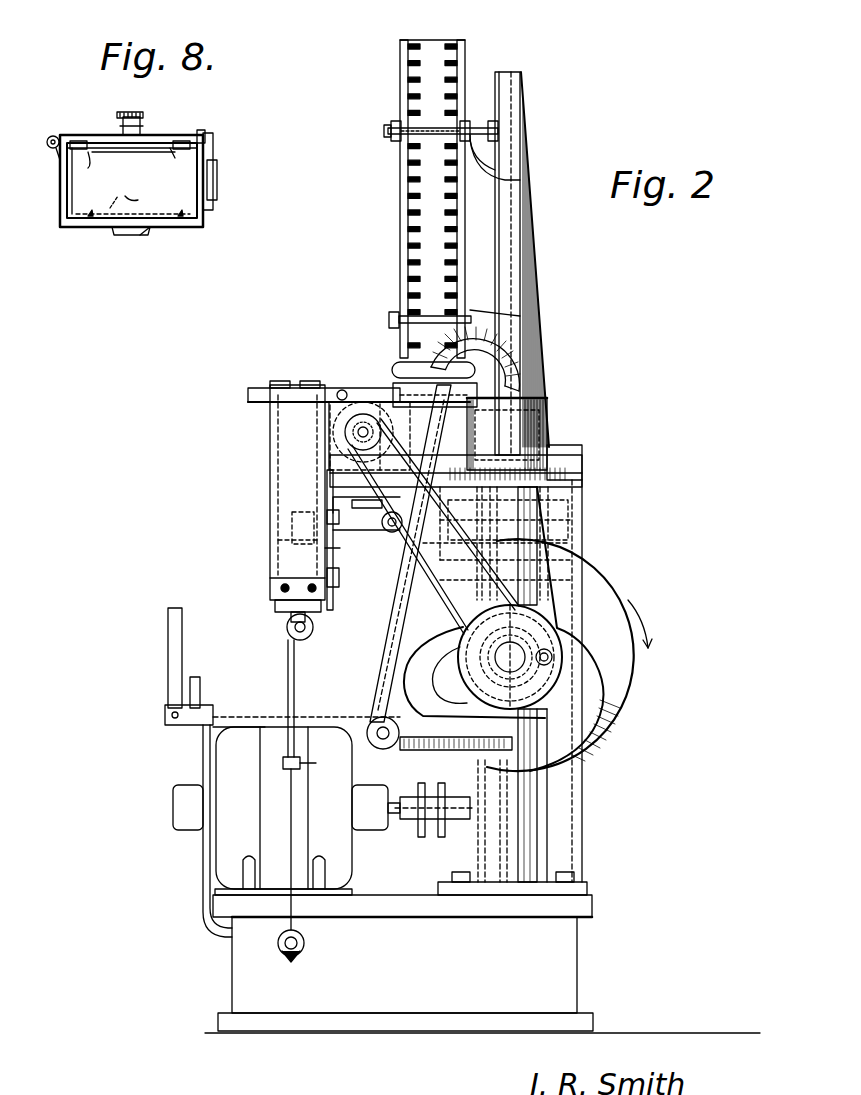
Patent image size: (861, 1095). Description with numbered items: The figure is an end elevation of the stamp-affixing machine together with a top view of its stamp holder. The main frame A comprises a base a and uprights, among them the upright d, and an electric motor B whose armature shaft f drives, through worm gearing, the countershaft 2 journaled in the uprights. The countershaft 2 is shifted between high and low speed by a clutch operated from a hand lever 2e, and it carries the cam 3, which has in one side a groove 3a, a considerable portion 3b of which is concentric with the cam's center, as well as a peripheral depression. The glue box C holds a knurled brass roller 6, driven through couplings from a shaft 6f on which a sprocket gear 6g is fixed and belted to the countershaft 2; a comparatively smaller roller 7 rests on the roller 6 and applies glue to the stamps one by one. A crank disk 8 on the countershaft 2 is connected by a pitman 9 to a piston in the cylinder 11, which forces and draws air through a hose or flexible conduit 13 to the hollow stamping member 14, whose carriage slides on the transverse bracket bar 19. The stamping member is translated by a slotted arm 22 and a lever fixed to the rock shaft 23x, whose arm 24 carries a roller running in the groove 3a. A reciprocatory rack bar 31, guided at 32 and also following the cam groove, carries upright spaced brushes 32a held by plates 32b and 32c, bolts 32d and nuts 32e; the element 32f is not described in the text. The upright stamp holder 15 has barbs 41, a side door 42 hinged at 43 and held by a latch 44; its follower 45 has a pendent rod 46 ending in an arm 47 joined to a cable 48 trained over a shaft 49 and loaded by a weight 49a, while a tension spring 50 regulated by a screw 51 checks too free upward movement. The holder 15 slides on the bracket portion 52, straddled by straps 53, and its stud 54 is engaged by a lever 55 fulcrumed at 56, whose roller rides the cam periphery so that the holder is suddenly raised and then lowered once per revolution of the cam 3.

In FIG. 2, the countershaft 2 is at (515, 662).
In FIG. 2, the hand lever 2e is at (168, 645).
In FIG. 2, the cam 3 is at (602, 580).
In FIG. 2, the groove 3a is at (652, 623).
In FIG. 2, the concentric portion of the groove 3b is at (560, 748).
In FIG. 2, the roller 6 is at (312, 426).
In FIG. 2, the shaft 6f is at (340, 390).
In FIG. 2, the sprocket gear 6g is at (365, 420).
In FIG. 8, the roller 7 is at (174, 156).
In FIG. 2, the roller 7 is at (330, 395).
In FIG. 2, the crank disk 8 is at (552, 657).
In FIG. 2, the pitman 9 is at (520, 625).
In FIG. 2, the cylinder 11 is at (515, 432).
In FIG. 2, the hose or flexible conduit 13 is at (505, 350).
In FIG. 2, the stamping member 14 is at (470, 370).
In FIG. 8, the stamp holder 15 is at (185, 230).
In FIG. 2, the stamp holder 15 is at (270, 490).
In FIG. 2, the transverse bracket bar 19 is at (262, 398).
In FIG. 2, the arm 22 is at (408, 640).
In FIG. 2, the rock shaft 23x is at (383, 749).
In FIG. 2, the arm 24 is at (445, 838).
In FIG. 2, the rack bar 31 is at (515, 160).
In FIG. 2, the guide 32 is at (497, 250).
In FIG. 2, the brushes 32a is at (415, 45).
In FIG. 2, the plates 32b is at (520, 181).
In FIG. 2, the plates 32c is at (384, 131).
In FIG. 2, the bolts 32d is at (420, 130).
In FIG. 2, the nuts 32e is at (392, 312).
In FIG. 2, the bracket 32f is at (478, 128).
In FIG. 8, the barbs 41 is at (100, 172).
In FIG. 8, the side door 42 is at (93, 130).
In FIG. 8, the hinge 43 is at (50, 148).
In FIG. 8, the latch 44 is at (205, 134).
In FIG. 2, the follower 45 is at (270, 540).
In FIG. 2, the pendent rod 46 is at (296, 668).
In FIG. 2, the enlargement or arm 47 is at (300, 768).
In FIG. 2, the cable 48 is at (296, 700).
In FIG. 2, the shaft 49 is at (287, 627).
In FIG. 2, the weight 49a is at (304, 947).
In FIG. 8, the tension spring 50 is at (170, 141).
In FIG. 8, the regulating screw 51 is at (147, 111).
In FIG. 2, the vertically disposed bracket portion 52 is at (330, 548).
In FIG. 8, the straps 53 is at (217, 185).
In FIG. 2, the straps 53 is at (340, 560).
In FIG. 2, the stud 54 is at (292, 522).
In FIG. 2, the lever 55 is at (376, 532).
In FIG. 2, the fulcrum on stationary support 56 is at (390, 534).
In FIG. 2, the main frame A is at (577, 950).
In FIG. 2, the electric motor B is at (216, 848).
In FIG. 2, the glue box C is at (384, 400).
In FIG. 2, the base a is at (218, 1012).
In FIG. 2, the upright d is at (528, 850).
In FIG. 2, the armature shaft f is at (395, 820).